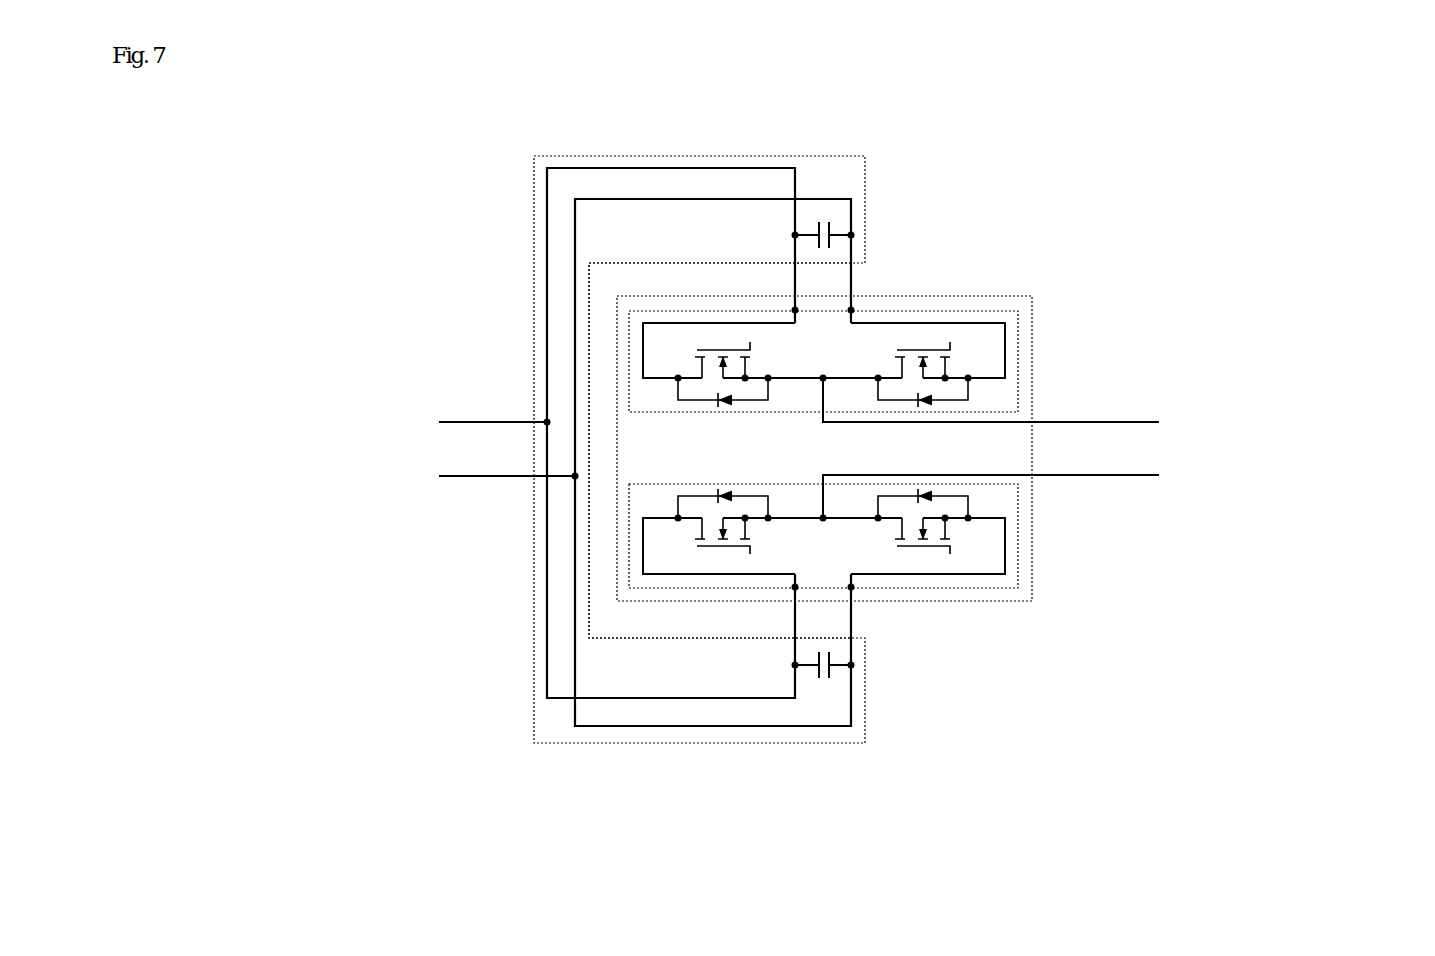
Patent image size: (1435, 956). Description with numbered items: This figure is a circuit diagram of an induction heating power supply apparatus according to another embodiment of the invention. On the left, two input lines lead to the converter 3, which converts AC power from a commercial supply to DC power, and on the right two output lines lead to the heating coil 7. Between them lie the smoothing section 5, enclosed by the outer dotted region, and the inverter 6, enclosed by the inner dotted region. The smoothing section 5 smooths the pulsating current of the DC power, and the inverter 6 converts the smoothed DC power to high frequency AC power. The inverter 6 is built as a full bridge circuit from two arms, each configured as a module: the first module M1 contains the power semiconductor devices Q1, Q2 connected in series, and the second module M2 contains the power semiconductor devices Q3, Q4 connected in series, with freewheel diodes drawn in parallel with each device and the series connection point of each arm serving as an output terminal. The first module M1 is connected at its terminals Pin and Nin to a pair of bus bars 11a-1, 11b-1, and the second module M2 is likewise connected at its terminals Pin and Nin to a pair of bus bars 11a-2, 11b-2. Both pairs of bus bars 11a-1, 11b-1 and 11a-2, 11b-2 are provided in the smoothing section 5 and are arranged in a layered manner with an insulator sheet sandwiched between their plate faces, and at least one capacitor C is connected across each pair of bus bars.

The smoothing section 5 is at (628, 472).
The inverter 6 is at (860, 453).
The converter 3 is at (433, 449).
The heating coil 7 is at (1163, 449).
The bus bar 11a-1 is at (718, 168).
The bus bar 11b-1 is at (645, 199).
The bus bar 11a-2 is at (696, 698).
The bus bar 11b-2 is at (770, 726).
The capacitor C is at (823, 456).
The positive input terminal Pin is at (795, 310).
The negative input terminal Nin is at (851, 310).
The first module M1 is at (863, 361).
The second module M2 is at (864, 536).
The power semiconductor device Q1 is at (717, 373).
The power semiconductor device Q2 is at (917, 373).
The power semiconductor device Q3 is at (717, 523).
The power semiconductor device Q4 is at (917, 523).